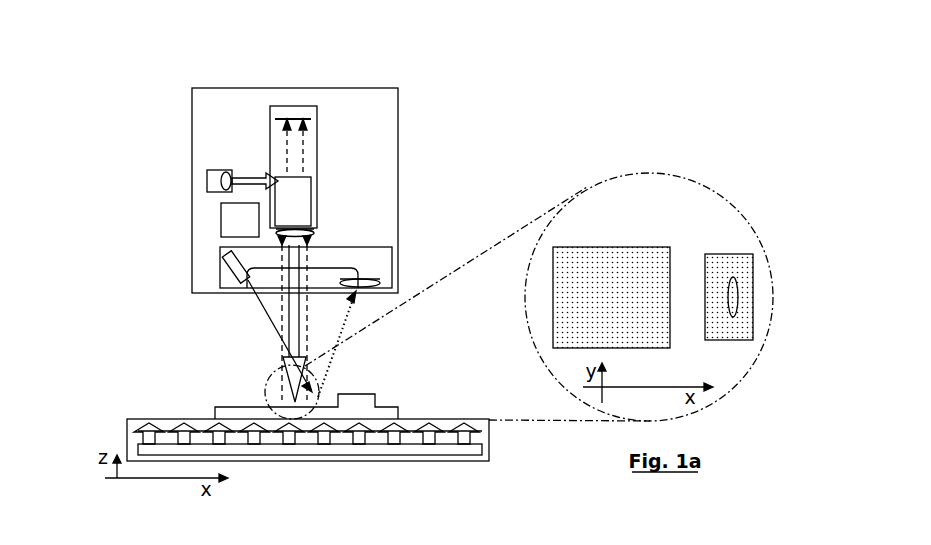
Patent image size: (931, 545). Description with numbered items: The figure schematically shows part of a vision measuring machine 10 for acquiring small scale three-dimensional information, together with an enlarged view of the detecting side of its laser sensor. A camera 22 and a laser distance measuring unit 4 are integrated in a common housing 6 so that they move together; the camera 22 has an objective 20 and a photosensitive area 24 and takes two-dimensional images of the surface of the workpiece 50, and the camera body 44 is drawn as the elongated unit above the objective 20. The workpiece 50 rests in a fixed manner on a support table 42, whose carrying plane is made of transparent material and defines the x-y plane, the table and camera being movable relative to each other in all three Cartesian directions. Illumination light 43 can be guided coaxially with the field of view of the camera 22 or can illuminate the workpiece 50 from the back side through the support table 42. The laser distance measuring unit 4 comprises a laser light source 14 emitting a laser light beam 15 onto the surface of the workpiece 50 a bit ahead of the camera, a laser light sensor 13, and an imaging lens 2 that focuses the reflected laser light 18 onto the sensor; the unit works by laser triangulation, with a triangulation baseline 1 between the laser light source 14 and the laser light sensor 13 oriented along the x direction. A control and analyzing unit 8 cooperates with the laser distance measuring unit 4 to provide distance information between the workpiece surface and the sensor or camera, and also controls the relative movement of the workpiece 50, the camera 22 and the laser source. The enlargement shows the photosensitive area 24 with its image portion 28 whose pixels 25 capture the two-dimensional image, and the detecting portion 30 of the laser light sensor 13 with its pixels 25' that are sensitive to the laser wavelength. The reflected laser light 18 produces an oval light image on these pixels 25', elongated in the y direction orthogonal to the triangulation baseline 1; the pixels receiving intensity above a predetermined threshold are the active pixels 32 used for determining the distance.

The measuring machine 10 is at (172, 106).
The common housing 6 is at (211, 133).
The control and analyzing unit 8 is at (233, 230).
The beam path housing 44 is at (303, 160).
The camera 22 is at (374, 77).
The objective 20 is at (303, 205).
The light 43 is at (463, 430).
The triangulation baseline 1 is at (312, 247).
The imaging lens 2 is at (365, 291).
The laser light source 14 is at (227, 258).
The laser light beam 15 is at (274, 326).
The laser distance measuring unit 4 is at (372, 267).
The reflected laser light 18 is at (330, 356).
The workpiece 50 is at (405, 400).
The support table 42 is at (432, 418).
The image portion 28 is at (598, 305).
The photosensitive area 24 is at (602, 229).
The pixels 25 is at (657, 197).
The detecting portion 30 is at (717, 257).
The pixels of the detecting portion 25' is at (753, 216).
The laser light sensor 13 is at (766, 289).
The active pixels 32 is at (738, 305).